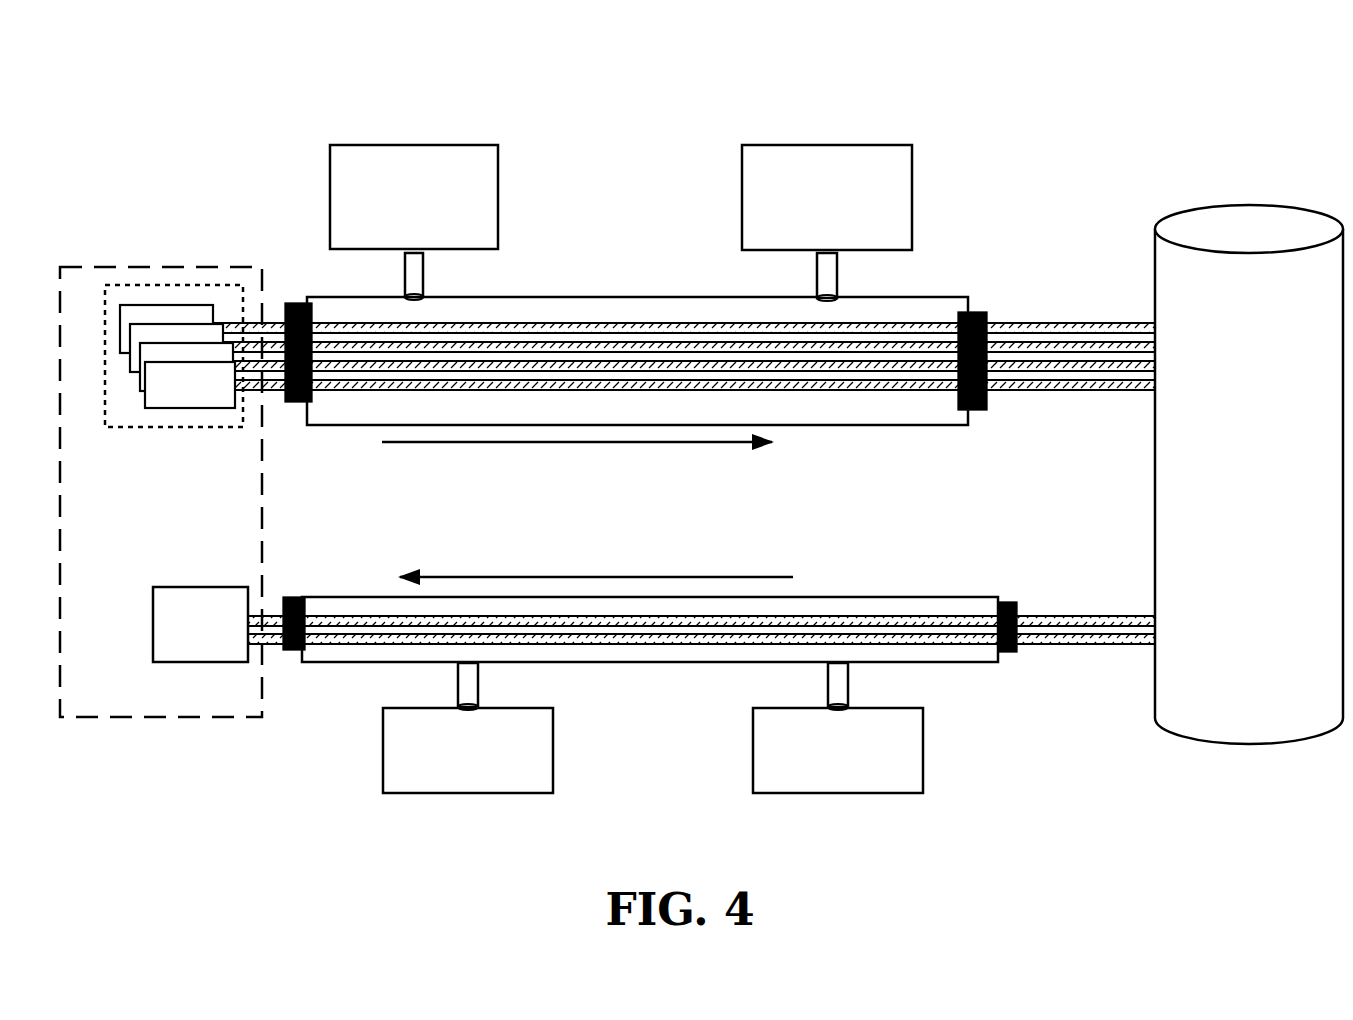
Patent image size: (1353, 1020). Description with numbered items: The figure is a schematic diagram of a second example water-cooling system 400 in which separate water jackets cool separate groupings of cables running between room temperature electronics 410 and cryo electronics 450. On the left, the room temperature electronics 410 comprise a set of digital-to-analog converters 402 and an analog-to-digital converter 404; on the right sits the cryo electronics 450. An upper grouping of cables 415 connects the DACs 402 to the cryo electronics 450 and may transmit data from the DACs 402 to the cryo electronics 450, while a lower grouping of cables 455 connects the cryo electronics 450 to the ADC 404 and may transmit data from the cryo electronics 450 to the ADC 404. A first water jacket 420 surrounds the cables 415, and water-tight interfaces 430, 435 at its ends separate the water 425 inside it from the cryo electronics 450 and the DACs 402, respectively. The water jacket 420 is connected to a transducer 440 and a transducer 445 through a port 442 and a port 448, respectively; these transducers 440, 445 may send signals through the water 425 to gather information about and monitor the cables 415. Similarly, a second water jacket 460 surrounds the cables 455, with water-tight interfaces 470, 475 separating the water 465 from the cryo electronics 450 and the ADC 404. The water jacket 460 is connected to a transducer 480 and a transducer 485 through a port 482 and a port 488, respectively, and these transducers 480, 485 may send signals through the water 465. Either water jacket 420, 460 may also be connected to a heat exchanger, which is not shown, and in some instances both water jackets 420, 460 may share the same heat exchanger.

The water-cooling system 400 is at (1232, 112).
The digital-to-analog converters 402 is at (172, 427).
The analog-to-digital converter 404 is at (200, 624).
The room temperature electronics 410 is at (135, 267).
The cables 415 is at (1035, 308).
The water jacket 420 is at (516, 297).
The water 425 is at (630, 318).
The water-tight interface 430 is at (984, 409).
The water-tight interface 435 is at (293, 402).
The transducer 440 is at (414, 197).
The port 442 is at (405, 285).
The transducer 445 is at (827, 197).
The port 448 is at (837, 274).
The cryo electronics 450 is at (1249, 474).
The cables 455 is at (1039, 600).
The water jacket 460 is at (922, 597).
The water 465 is at (805, 607).
The water-tight interface 470 is at (1017, 652).
The water-tight interface 475 is at (293, 650).
The transducer 480 is at (468, 750).
The port 482 is at (457, 690).
The transducer 485 is at (838, 750).
The port 488 is at (848, 685).